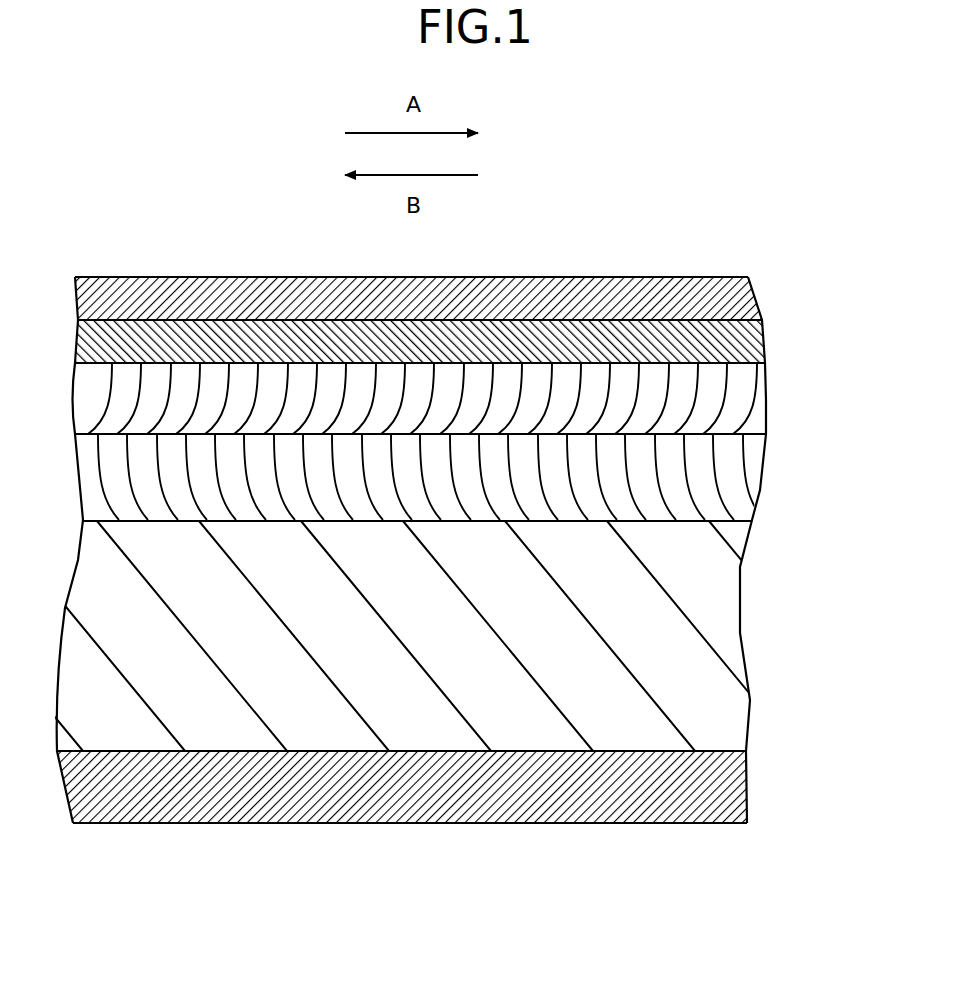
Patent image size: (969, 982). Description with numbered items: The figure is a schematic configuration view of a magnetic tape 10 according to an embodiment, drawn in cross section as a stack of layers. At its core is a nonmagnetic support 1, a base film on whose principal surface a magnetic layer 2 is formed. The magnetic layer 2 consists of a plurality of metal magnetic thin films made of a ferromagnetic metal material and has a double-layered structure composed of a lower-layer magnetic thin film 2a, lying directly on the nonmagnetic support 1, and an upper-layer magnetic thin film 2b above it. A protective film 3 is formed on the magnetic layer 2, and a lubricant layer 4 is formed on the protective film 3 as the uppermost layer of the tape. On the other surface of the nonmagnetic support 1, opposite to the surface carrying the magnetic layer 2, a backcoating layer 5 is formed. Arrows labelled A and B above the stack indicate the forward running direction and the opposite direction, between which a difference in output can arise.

The magnetic tape 10 is at (459, 608).
The nonmagnetic support 1 is at (740, 640).
The magnetic layer 2 is at (496, 441).
The lower-layer magnetic thin film 2a is at (753, 455).
The upper-layer magnetic thin film 2b is at (765, 408).
The protective film 3 is at (763, 338).
The lubricant layer 4 is at (755, 292).
The backcoating layer 5 is at (746, 782).